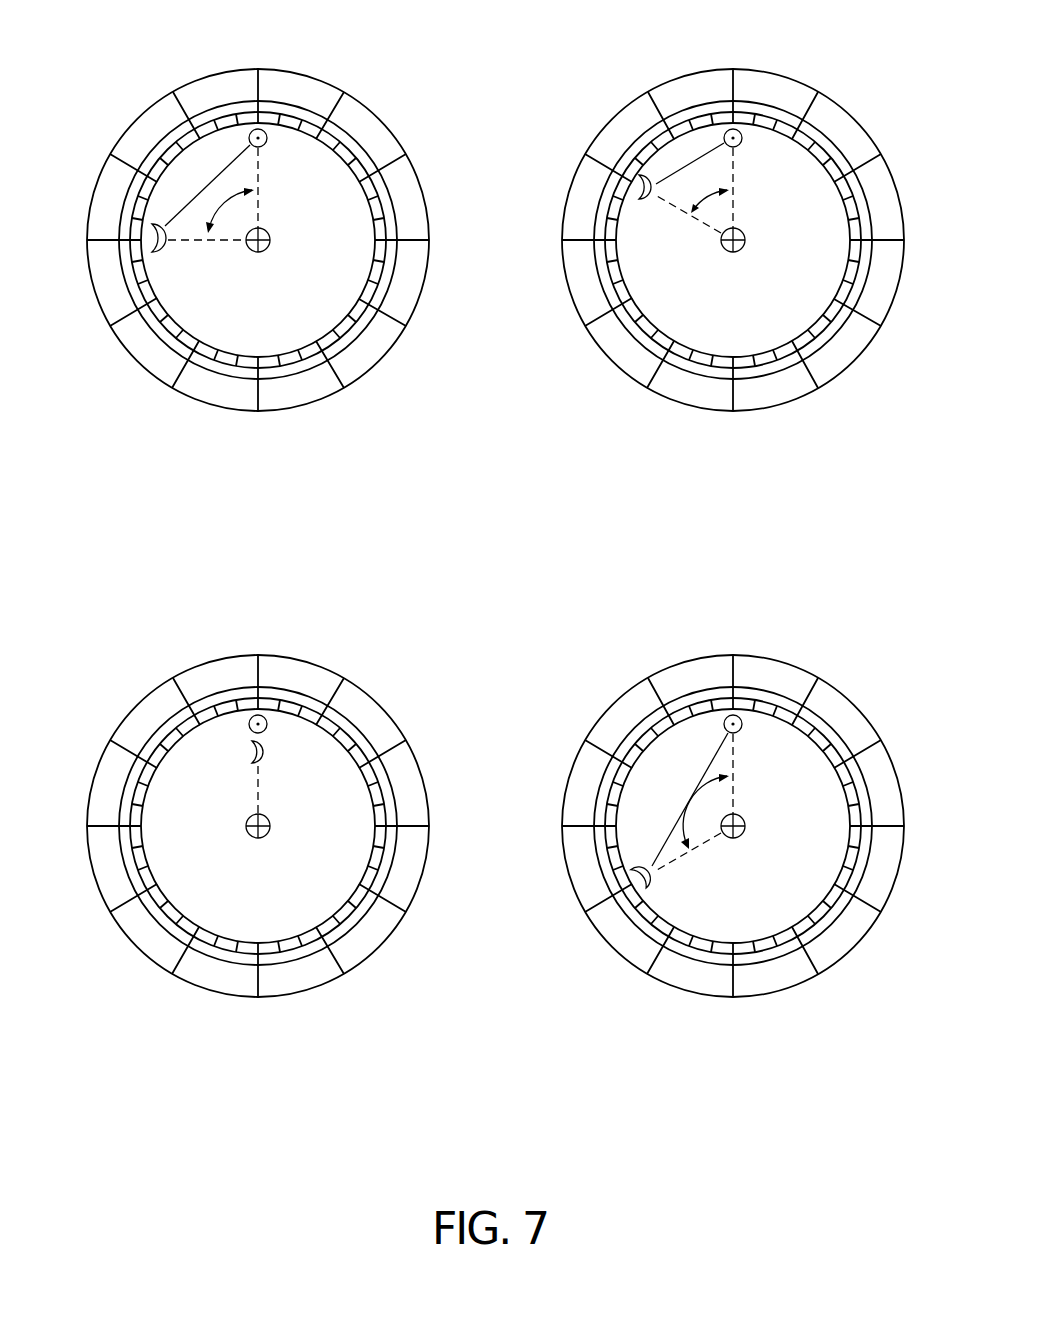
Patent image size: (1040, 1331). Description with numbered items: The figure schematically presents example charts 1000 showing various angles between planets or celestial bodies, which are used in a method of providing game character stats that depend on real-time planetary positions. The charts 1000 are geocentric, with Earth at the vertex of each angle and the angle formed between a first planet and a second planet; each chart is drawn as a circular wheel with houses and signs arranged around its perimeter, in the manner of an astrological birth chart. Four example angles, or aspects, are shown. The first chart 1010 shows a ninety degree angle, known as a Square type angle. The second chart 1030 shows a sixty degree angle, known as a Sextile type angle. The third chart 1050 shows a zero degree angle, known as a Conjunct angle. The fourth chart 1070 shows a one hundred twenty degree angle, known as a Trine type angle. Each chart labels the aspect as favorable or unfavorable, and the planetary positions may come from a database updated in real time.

The charts 1000 is at (124, 50).
The first chart 1010 is at (393, 111).
The second chart 1030 is at (868, 111).
The third chart 1050 is at (393, 697).
The fourth chart 1070 is at (868, 697).